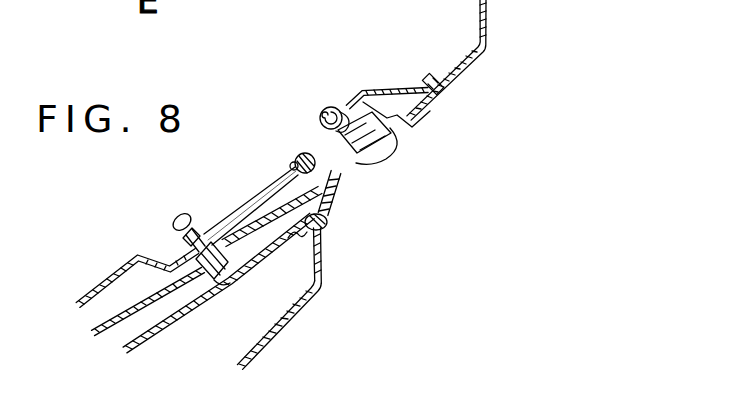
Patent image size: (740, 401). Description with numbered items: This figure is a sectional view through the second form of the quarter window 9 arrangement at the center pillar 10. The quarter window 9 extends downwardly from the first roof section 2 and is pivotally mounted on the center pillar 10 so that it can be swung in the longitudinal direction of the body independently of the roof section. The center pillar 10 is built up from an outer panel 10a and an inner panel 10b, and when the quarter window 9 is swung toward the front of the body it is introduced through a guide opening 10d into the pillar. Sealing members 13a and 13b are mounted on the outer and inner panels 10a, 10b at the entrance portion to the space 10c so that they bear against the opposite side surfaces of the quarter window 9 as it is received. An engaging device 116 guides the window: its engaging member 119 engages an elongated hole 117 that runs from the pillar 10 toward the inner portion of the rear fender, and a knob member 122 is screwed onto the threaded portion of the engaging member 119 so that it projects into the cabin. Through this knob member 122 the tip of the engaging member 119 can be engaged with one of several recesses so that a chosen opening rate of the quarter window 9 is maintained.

The first roof section 2 is at (480, 24).
The quarter window 9 is at (268, 230).
The center pillar 10 is at (324, 280).
The outer panel 10a is at (286, 330).
The inner panel 10b is at (102, 283).
The space 10c is at (157, 311).
The guide opening 10d is at (333, 225).
The sealing member 13a is at (343, 208).
The sealing member 13b is at (306, 152).
The engaging device 116 is at (204, 223).
The elongated hole 117 is at (253, 199).
The engaging member 119 is at (228, 281).
The knob member 122 is at (172, 218).